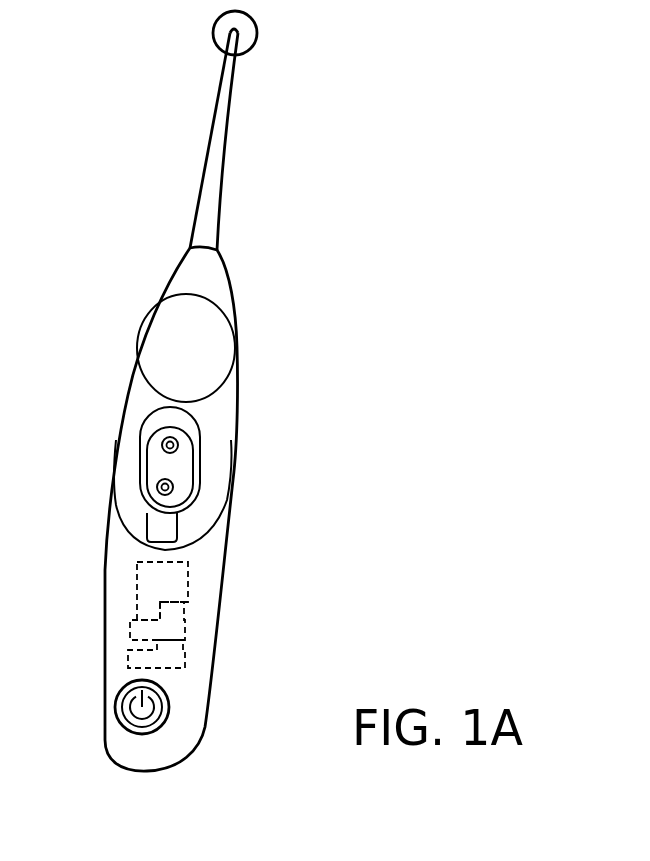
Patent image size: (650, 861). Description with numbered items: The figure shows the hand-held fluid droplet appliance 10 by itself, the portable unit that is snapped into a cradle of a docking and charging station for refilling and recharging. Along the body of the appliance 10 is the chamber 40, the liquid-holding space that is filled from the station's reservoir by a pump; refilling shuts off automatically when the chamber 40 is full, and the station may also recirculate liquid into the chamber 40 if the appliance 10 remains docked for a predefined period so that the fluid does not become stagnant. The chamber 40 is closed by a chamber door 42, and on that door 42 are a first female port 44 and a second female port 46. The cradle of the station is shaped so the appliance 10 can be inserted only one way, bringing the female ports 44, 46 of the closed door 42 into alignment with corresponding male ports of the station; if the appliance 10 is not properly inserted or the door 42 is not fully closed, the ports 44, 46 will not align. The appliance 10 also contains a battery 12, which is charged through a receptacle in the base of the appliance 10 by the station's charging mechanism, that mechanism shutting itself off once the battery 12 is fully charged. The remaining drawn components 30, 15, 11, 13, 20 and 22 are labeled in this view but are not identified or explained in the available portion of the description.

The hand-held fluid droplet appliance 10 is at (382, 171).
The nozzle 30 is at (223, 145).
The reservoir 15 is at (152, 343).
The chamber 40 is at (150, 414).
The chamber door 42 is at (155, 463).
The first female port 44 is at (178, 443).
The second female port 46 is at (173, 487).
The controller 11 is at (177, 573).
The memory 13 is at (175, 630).
The battery 12 is at (133, 657).
The power button 20 is at (167, 713).
The power indicator 22 is at (147, 683).